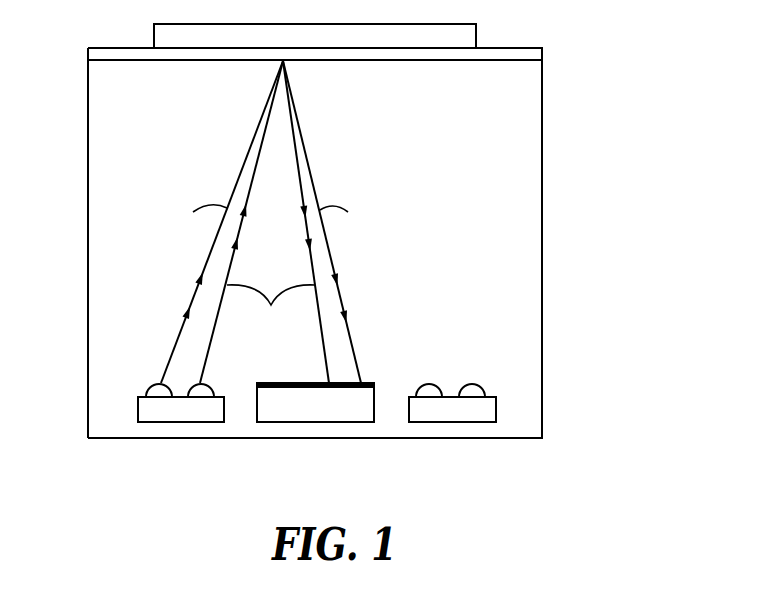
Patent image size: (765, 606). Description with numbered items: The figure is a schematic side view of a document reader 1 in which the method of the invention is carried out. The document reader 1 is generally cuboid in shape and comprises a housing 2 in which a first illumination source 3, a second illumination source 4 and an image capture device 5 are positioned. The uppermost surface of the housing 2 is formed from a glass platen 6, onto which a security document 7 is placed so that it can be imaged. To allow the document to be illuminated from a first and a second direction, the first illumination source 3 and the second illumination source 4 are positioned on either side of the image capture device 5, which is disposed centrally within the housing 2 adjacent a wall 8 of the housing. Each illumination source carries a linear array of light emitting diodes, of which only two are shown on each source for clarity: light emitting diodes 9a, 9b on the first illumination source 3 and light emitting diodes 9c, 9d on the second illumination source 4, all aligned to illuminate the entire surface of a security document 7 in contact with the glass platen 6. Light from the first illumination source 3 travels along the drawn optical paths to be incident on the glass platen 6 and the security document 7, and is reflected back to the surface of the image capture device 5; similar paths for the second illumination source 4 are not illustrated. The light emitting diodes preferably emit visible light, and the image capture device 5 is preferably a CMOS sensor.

The document reader 1 is at (598, 132).
The housing 2 is at (543, 296).
The first illumination source 3 is at (177, 422).
The second illumination source 4 is at (452, 422).
The image capture device 5 is at (310, 422).
The glass platen 6 is at (543, 53).
The security document 7 is at (477, 36).
The wall 8 is at (88, 291).
The light emitting diode 9a is at (151, 388).
The light emitting diode 9b is at (211, 386).
The light emitting diode 9c is at (433, 384).
The light emitting diode 9d is at (474, 384).